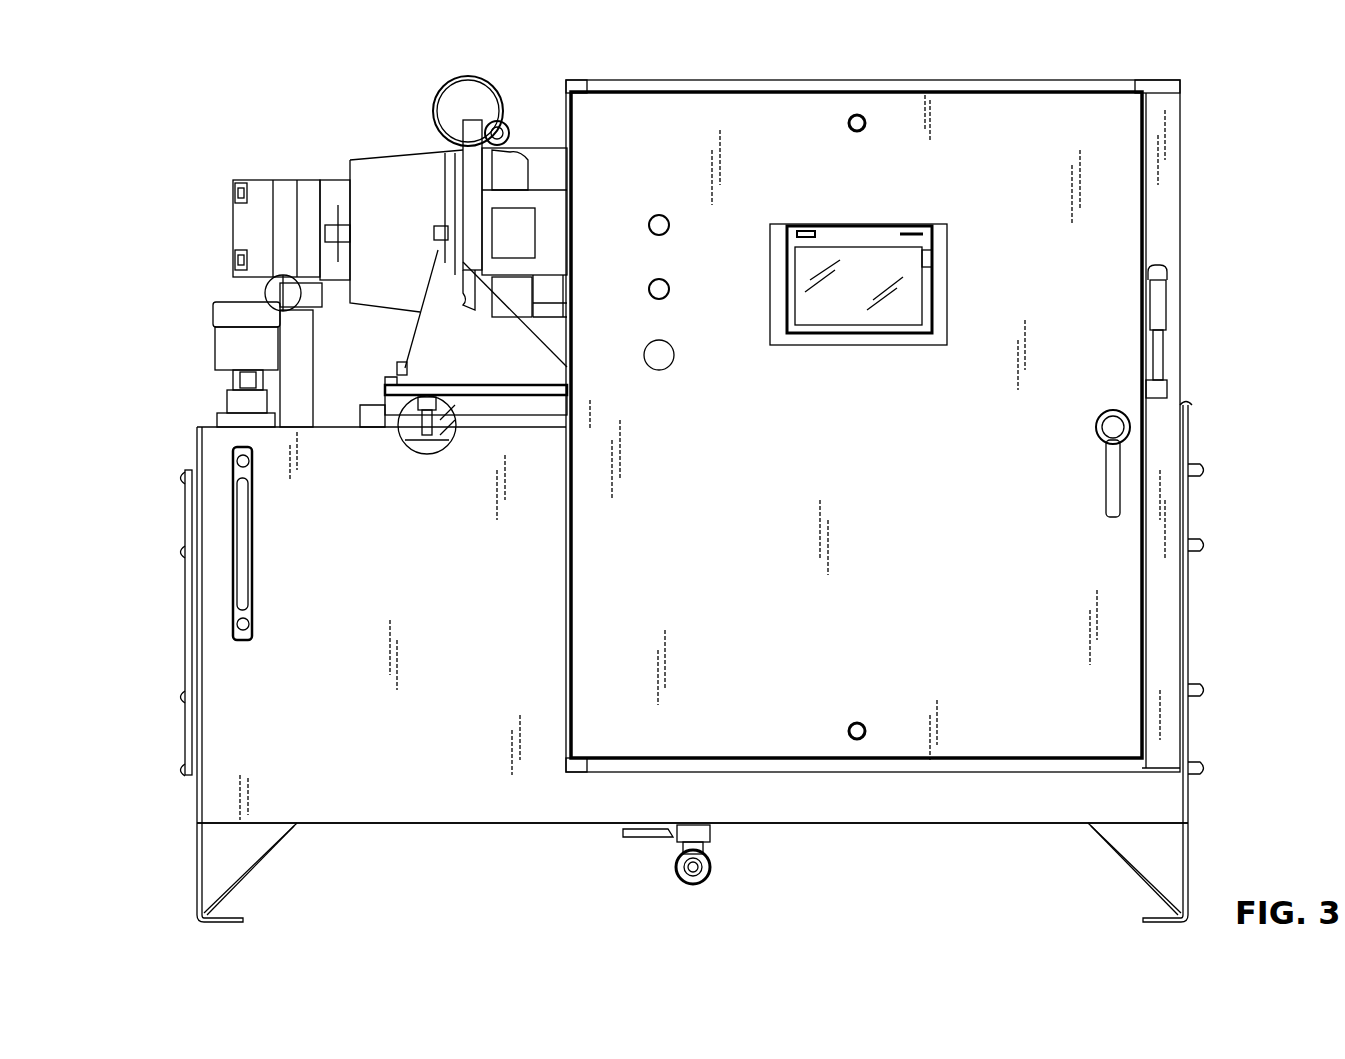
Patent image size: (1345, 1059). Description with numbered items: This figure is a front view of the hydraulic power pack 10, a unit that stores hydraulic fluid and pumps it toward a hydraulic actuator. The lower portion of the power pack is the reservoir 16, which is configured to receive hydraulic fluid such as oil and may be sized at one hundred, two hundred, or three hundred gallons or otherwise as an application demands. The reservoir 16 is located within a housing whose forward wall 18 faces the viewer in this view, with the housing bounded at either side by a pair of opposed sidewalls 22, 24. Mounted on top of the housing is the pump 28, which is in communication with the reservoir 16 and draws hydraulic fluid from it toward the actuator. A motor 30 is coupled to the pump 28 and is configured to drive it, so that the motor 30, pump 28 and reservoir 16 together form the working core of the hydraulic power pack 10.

The hydraulic power pack 10 is at (1124, 55).
The reservoir 16 is at (185, 588).
The forward wall 18 is at (417, 805).
The sidewall 22 is at (200, 843).
The sidewall 24 is at (1190, 837).
The pump 28 is at (244, 173).
The motor 30 is at (541, 140).